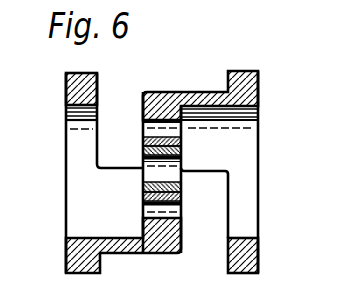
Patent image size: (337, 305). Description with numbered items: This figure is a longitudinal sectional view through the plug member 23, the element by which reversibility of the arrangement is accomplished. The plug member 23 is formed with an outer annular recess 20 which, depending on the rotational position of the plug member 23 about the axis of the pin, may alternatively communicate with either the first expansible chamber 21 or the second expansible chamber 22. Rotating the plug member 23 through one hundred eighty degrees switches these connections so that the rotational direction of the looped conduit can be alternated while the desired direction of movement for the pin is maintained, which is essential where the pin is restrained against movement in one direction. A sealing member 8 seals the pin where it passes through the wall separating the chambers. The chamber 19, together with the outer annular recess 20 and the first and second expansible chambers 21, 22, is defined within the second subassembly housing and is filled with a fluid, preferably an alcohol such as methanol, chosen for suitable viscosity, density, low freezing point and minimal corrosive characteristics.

The outer annular recess 20 is at (103, 78).
The first expansible chamber 21 is at (108, 195).
The sealing member 8 is at (135, 142).
The plug member 23 is at (173, 85).
The second expansible chamber 22 is at (207, 156).
The chamber 19 is at (192, 245).